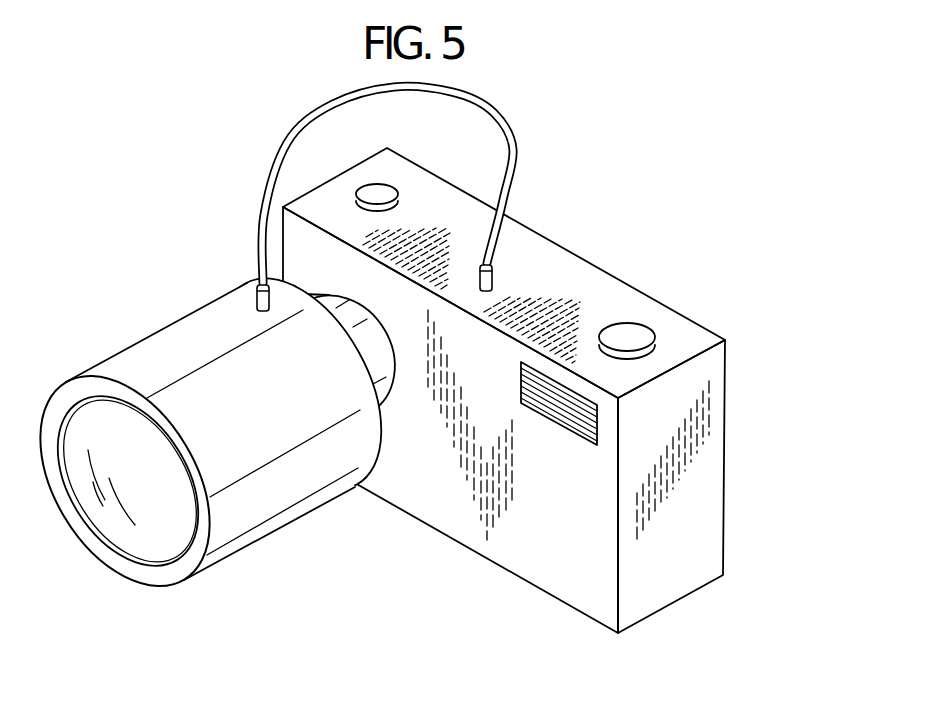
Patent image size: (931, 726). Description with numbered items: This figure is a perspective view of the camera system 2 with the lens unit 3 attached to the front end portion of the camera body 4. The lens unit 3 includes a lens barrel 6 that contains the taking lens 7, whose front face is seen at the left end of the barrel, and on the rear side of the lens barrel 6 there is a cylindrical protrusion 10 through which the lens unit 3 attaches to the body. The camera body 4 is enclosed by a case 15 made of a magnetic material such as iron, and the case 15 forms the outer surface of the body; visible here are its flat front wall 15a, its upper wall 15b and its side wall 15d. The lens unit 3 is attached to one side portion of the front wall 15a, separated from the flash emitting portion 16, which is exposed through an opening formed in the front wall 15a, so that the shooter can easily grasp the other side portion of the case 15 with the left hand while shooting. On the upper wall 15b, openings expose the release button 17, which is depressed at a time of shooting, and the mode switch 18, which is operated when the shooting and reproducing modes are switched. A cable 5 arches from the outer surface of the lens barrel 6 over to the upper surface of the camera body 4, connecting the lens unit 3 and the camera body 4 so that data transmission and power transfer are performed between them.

The camera system 2 is at (407, 387).
The lens unit 3 is at (211, 439).
The camera body 4 is at (546, 402).
The cable 5 is at (293, 147).
The lens barrel 6 is at (235, 518).
The taking lens 7 is at (147, 538).
The cylindrical protrusion 10 is at (333, 300).
The case 15 is at (546, 413).
The front wall 15a is at (520, 550).
The upper wall 15b is at (575, 272).
The side wall 15d is at (712, 488).
The flash emitting portion 16 is at (562, 412).
The release button 17 is at (380, 188).
The mode switch 18 is at (637, 333).